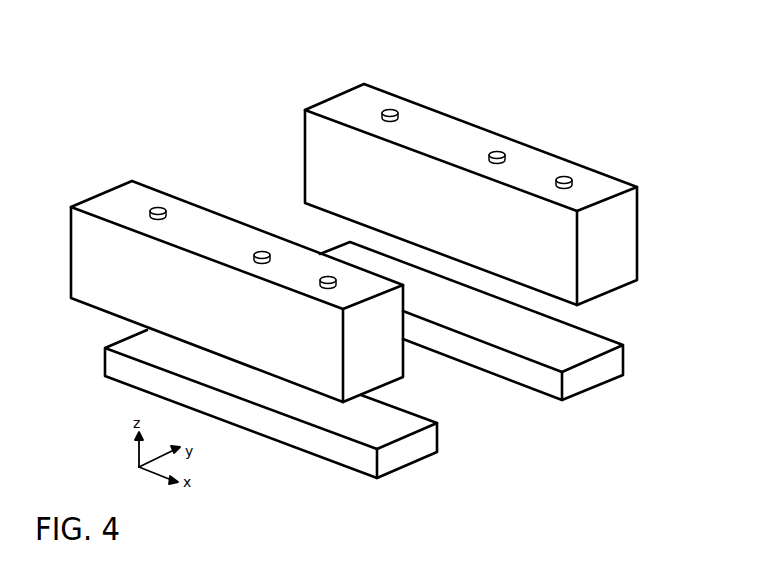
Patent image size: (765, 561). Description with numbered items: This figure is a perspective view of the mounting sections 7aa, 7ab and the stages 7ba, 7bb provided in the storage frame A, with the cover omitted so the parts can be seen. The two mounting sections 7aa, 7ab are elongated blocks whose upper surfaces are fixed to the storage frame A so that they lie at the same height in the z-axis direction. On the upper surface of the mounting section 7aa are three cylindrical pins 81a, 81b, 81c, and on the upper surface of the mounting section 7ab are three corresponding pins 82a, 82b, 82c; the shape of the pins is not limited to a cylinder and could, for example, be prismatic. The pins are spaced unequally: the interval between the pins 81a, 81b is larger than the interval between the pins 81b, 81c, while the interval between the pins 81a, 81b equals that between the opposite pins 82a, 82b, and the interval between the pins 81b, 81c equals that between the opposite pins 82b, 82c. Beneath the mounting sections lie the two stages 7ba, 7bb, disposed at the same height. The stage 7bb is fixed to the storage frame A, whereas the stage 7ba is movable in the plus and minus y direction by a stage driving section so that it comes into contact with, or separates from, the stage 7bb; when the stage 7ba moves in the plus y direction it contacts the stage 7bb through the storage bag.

The storage frame A is at (213, 98).
The mounting section 7aa is at (87, 199).
The mounting section 7ab is at (320, 102).
The stage 7ba is at (418, 462).
The stage 7bb is at (598, 388).
The pin 81a is at (157, 207).
The pin 81b is at (260, 251).
The pin 81c is at (327, 276).
The pin 82a is at (390, 109).
The pin 82b is at (497, 151).
The pin 82c is at (566, 176).